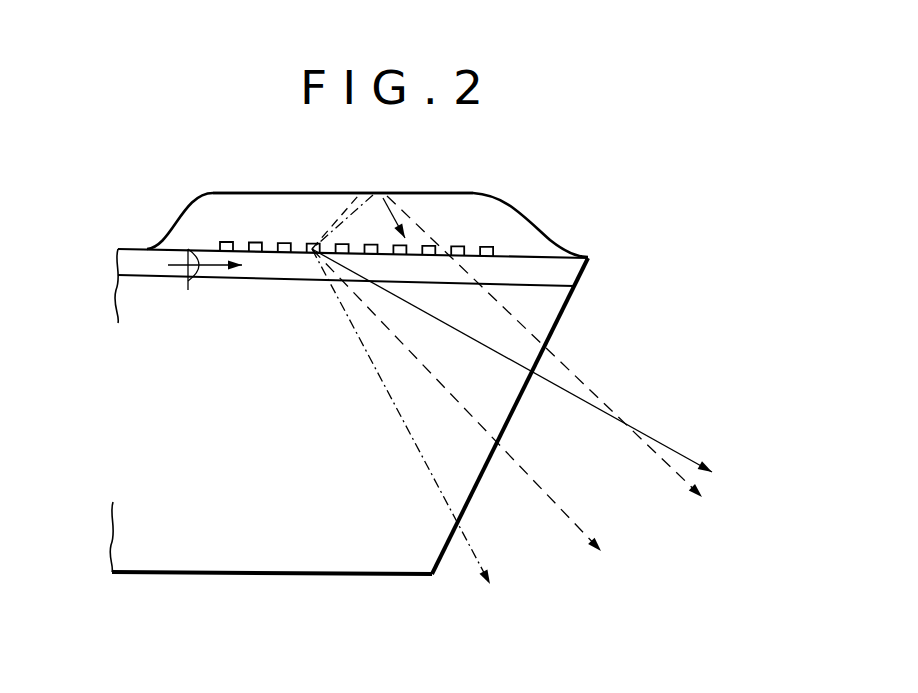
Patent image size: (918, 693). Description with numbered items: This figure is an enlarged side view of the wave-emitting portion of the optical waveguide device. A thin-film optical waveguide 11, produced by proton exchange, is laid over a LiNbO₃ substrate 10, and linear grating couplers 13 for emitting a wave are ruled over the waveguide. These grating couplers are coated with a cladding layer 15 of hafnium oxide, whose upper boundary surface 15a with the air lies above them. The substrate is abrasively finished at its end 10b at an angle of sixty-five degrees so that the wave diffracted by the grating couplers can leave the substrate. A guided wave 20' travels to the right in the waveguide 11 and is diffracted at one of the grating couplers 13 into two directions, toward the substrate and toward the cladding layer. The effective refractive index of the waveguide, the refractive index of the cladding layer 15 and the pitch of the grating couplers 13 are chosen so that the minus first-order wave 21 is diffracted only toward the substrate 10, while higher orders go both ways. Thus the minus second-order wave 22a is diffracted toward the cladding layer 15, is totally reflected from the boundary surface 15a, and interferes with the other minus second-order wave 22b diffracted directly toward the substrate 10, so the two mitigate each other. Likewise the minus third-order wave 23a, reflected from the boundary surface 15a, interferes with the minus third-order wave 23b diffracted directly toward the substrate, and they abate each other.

The substrate 10 is at (278, 447).
The other end of substrate 10b is at (560, 318).
The thin-film optical waveguide 11 is at (138, 257).
The linear grating couplers for emitting a wave 13 is at (290, 247).
The cladding layer 15 is at (493, 189).
The boundary surface 15a is at (270, 168).
The guided wave 20' is at (205, 292).
The minus first-order diffracted wave 21 is at (673, 450).
The minus second-order diffracted wave 22a is at (583, 376).
The minus second-order diffracted wave 22b is at (517, 460).
The minus third-order diffracted wave 23a is at (373, 195).
The minus third-order diffracted wave 23b is at (463, 537).